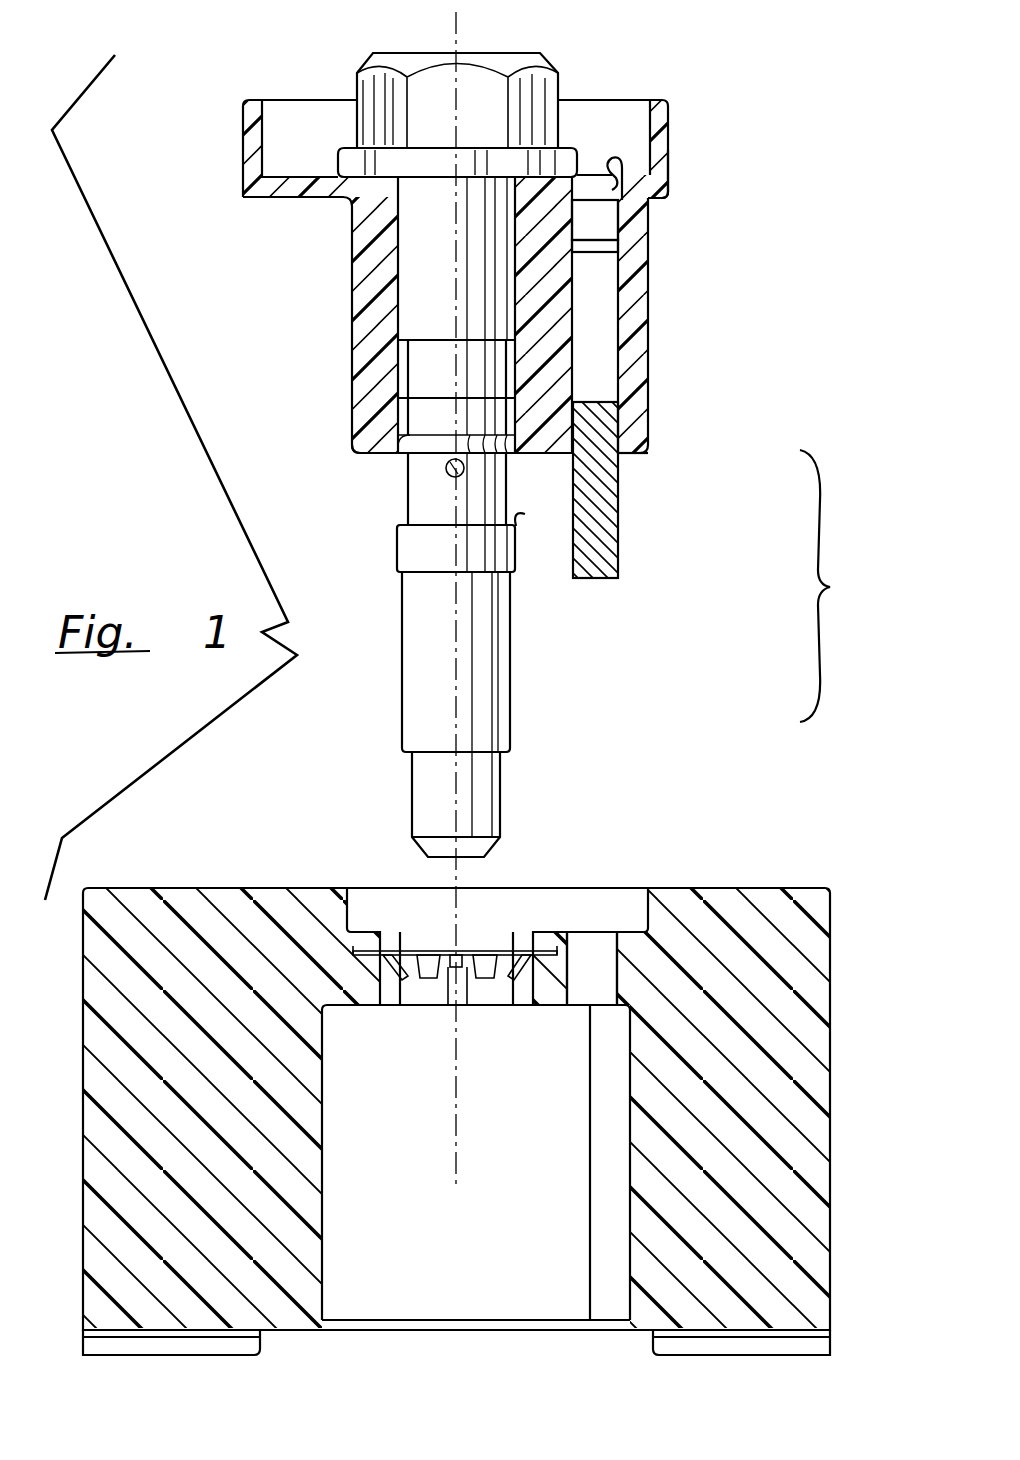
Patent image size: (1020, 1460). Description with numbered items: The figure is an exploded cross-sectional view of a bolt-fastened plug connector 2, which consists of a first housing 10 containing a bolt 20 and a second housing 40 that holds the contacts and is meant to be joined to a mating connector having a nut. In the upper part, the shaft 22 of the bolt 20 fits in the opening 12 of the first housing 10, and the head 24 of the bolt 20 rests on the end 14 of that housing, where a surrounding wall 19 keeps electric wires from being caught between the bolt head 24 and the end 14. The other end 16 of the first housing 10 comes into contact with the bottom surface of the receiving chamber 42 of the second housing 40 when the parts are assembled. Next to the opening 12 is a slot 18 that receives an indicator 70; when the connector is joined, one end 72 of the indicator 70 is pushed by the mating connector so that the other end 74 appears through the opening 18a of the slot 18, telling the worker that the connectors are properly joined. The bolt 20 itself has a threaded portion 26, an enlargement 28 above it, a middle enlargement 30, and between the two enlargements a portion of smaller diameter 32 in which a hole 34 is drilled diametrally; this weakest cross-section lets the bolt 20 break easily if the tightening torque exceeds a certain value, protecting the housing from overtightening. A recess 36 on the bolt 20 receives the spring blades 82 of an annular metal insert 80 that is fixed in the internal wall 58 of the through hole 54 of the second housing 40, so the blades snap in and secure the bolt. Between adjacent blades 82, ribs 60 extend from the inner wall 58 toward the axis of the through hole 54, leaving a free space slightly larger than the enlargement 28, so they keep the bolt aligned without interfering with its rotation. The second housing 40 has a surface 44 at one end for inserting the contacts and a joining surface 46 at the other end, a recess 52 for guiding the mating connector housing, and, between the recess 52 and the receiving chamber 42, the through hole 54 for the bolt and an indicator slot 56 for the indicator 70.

The plug connector 2 is at (831, 586).
The first housing 10 is at (672, 437).
The opening 12 is at (516, 195).
The end 14 is at (288, 175).
The other end 16 is at (375, 448).
The slot 18 is at (614, 213).
The opening of the slot 18a is at (617, 165).
The wall 19 is at (668, 178).
The bolt 20 is at (490, 40).
The shaft 22 is at (410, 238).
The head 24 is at (545, 85).
The threaded portion 26 is at (483, 698).
The enlargement 28 is at (410, 540).
The middle enlargement 30 is at (415, 408).
The portion of smaller diameter 32 is at (425, 497).
The hole 34 is at (452, 462).
The recess 36 is at (525, 514).
The second housing 40 is at (670, 852).
The receiving chamber 42 is at (645, 905).
The surface 44 is at (263, 888).
The joining surface 46 is at (290, 1330).
The recess 52 is at (432, 1298).
The through hole 54 is at (435, 992).
The indicator slot 56 is at (580, 985).
The internal wall 58 is at (528, 985).
The ribs 60 is at (420, 985).
The indicator 70 is at (632, 327).
The one end of the indicator 72 is at (600, 580).
The other end of the indicator 74 is at (604, 236).
The metal insert 80 is at (493, 932).
The spring blades 82 is at (448, 950).